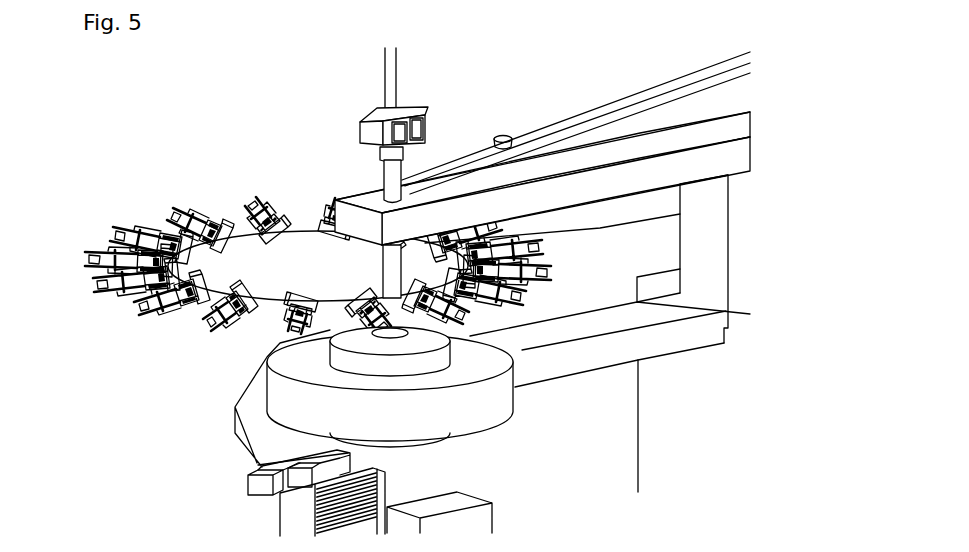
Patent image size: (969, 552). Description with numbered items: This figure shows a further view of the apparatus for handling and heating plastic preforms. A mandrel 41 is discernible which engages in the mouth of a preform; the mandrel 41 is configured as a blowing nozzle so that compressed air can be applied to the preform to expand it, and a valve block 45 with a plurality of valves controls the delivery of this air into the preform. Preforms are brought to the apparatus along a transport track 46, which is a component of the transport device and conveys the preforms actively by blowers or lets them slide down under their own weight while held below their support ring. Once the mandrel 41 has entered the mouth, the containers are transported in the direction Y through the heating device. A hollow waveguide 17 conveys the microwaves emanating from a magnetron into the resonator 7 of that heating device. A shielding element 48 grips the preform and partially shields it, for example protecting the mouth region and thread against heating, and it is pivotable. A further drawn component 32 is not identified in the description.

The resonator 7 is at (458, 407).
The hollow waveguide 17 is at (617, 353).
The gripper turret 32 is at (432, 302).
The mandrel 41 is at (407, 313).
The valve block 45 is at (375, 130).
The transport track 46 is at (623, 103).
The shielding element 48 is at (263, 483).